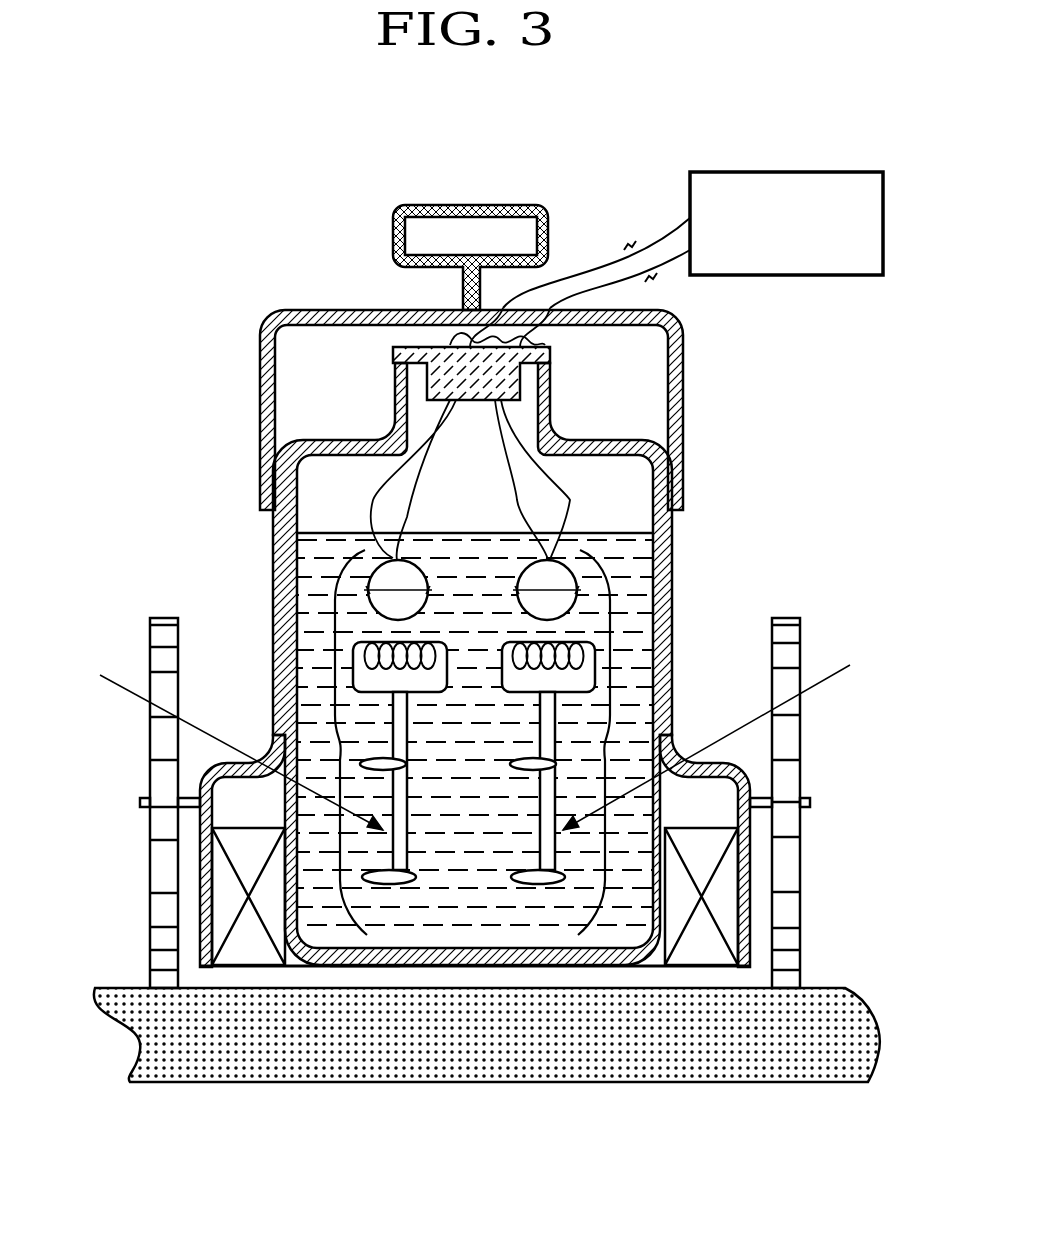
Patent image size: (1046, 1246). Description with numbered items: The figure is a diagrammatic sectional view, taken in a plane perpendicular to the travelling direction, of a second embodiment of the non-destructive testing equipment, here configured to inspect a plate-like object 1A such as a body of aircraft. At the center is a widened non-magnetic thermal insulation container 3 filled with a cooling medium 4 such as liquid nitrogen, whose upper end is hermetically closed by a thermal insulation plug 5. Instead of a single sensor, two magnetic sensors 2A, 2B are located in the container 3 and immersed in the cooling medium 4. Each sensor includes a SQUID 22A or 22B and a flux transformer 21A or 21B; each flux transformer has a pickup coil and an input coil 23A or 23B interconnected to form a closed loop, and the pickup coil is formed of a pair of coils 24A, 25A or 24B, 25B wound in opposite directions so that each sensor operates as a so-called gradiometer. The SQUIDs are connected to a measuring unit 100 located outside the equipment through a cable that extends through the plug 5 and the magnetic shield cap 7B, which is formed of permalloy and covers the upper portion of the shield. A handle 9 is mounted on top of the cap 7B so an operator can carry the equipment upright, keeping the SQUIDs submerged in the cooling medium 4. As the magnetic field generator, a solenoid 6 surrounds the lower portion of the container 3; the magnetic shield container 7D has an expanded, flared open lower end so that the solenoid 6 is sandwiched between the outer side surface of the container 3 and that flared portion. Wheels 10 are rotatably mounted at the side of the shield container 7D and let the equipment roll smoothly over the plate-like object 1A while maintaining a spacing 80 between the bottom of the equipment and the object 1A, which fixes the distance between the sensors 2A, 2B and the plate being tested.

The object to be tested 1A is at (560, 1065).
The magnetic sensor 2A is at (273, 733).
The magnetic sensor 2B is at (640, 745).
The thermal insulation container 3 is at (287, 518).
The cooling medium 4 is at (640, 548).
The thermal insulation plug 5 is at (423, 343).
The solenoid 6 is at (723, 903).
The magnetic shield cap 7B is at (683, 425).
The magnetic shield container 7D is at (753, 965).
The handle 9 is at (553, 237).
The wheels 10 is at (787, 827).
The flux transformer 21A is at (216, 744).
The flux transformer 21B is at (731, 744).
The SQUID 22A is at (363, 520).
The SQUID 22B is at (578, 520).
The input coil 23A is at (447, 680).
The input coil 23B is at (505, 716).
The coil 24A is at (407, 758).
The coil 24B is at (510, 760).
The coil 25A is at (400, 885).
The coil 25B is at (525, 905).
The spacing 80 is at (362, 973).
The measuring unit 100 is at (718, 172).